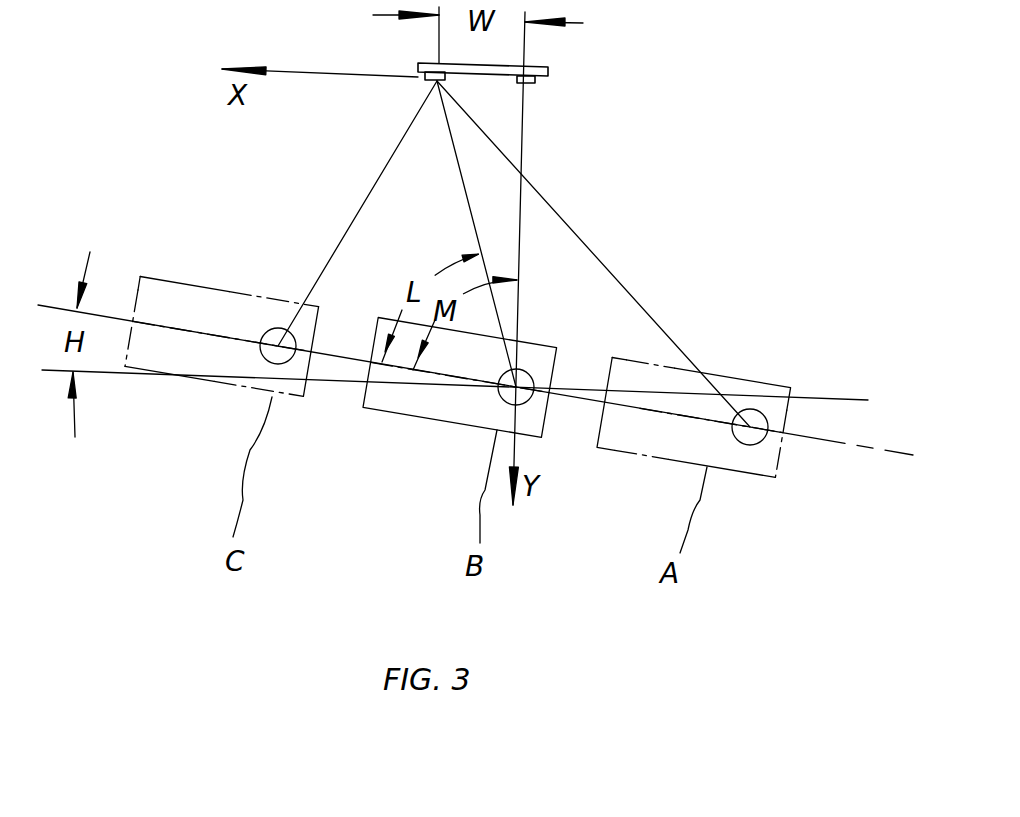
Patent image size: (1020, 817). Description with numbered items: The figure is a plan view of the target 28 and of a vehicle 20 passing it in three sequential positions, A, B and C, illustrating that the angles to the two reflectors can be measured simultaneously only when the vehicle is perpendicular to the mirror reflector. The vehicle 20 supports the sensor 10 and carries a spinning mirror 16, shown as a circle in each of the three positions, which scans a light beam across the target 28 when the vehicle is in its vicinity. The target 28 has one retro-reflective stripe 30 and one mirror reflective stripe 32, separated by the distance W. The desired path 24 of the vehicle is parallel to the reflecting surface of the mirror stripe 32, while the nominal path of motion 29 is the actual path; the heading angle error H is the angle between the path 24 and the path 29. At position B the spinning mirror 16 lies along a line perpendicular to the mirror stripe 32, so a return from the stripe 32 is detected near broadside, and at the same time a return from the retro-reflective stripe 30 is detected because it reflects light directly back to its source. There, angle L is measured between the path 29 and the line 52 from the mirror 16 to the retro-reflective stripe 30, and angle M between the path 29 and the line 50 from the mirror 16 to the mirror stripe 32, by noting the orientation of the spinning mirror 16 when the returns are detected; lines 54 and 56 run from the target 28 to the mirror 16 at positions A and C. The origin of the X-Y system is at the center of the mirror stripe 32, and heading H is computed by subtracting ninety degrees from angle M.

The sensor 10 is at (162, 277).
The spinning mirror 16 is at (530, 400).
The vehicle 20 is at (228, 382).
The desired path 24 is at (868, 400).
The target 28 is at (548, 72).
The nominal path of motion 29 is at (845, 443).
The retro-reflective stripe 30 is at (320, 88).
The mirror reflective stripe 32 is at (535, 82).
The line from mirror to mirror stripe 50 is at (520, 202).
The line from mirror to retro-reflective stripe 52 is at (462, 216).
The beam to vehicle position A 54 is at (570, 223).
The beam to vehicle position C 56 is at (387, 162).